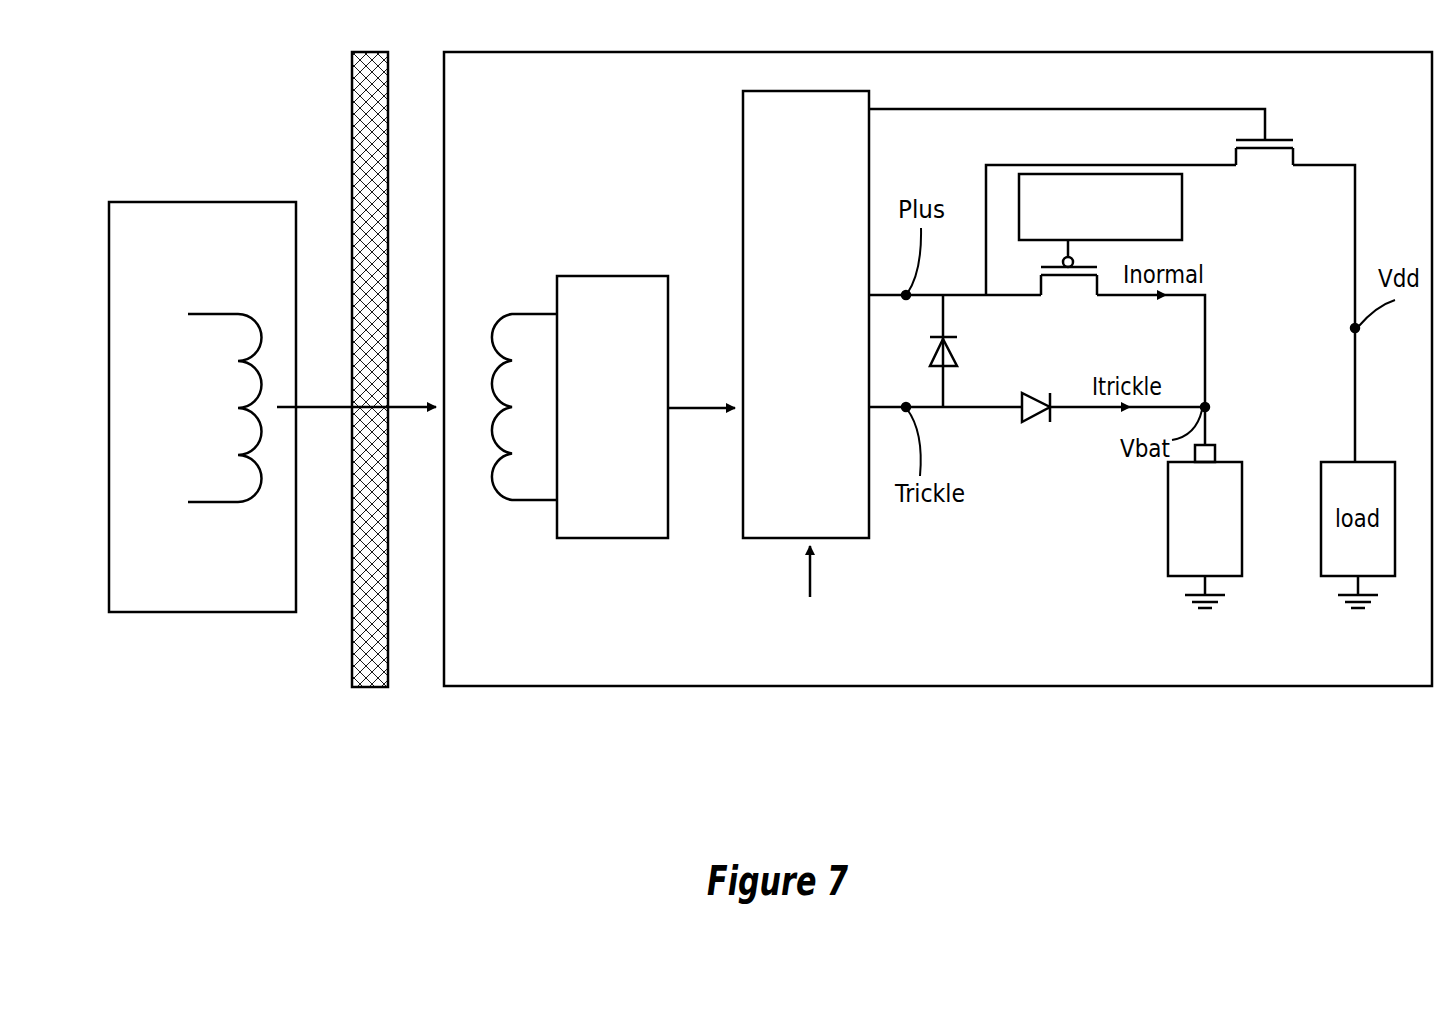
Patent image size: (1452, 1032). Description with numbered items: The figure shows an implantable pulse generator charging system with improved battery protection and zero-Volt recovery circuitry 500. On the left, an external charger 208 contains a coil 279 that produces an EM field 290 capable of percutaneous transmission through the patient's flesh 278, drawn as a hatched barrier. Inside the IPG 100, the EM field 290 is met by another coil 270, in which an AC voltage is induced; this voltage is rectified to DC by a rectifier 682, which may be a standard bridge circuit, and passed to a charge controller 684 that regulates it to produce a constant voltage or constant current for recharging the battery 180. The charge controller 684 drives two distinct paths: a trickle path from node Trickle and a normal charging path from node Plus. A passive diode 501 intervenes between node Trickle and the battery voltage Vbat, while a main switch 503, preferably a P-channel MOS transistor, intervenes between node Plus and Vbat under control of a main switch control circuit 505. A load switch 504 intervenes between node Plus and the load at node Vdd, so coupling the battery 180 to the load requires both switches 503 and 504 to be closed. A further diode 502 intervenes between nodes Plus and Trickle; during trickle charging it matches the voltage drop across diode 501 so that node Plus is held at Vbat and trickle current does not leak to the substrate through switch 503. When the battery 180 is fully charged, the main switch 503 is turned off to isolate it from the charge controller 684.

The IPG 100 is at (644, 688).
The battery 180 is at (1225, 531).
The external charger 208 is at (172, 614).
The coil 270 is at (530, 502).
The patient's flesh 278 is at (371, 686).
The coil 279 is at (222, 504).
The EM field 290 is at (333, 406).
The protection and zero-Volt recovery circuitry 500 is at (1001, 552).
The diode 501 is at (1031, 424).
The diode 502 is at (957, 352).
The main switch 503 is at (1076, 298).
The load switch 504 is at (1276, 170).
The main switch control circuit 505 is at (1100, 207).
The rectifier 682 is at (646, 407).
The charge controller 684 is at (806, 358).